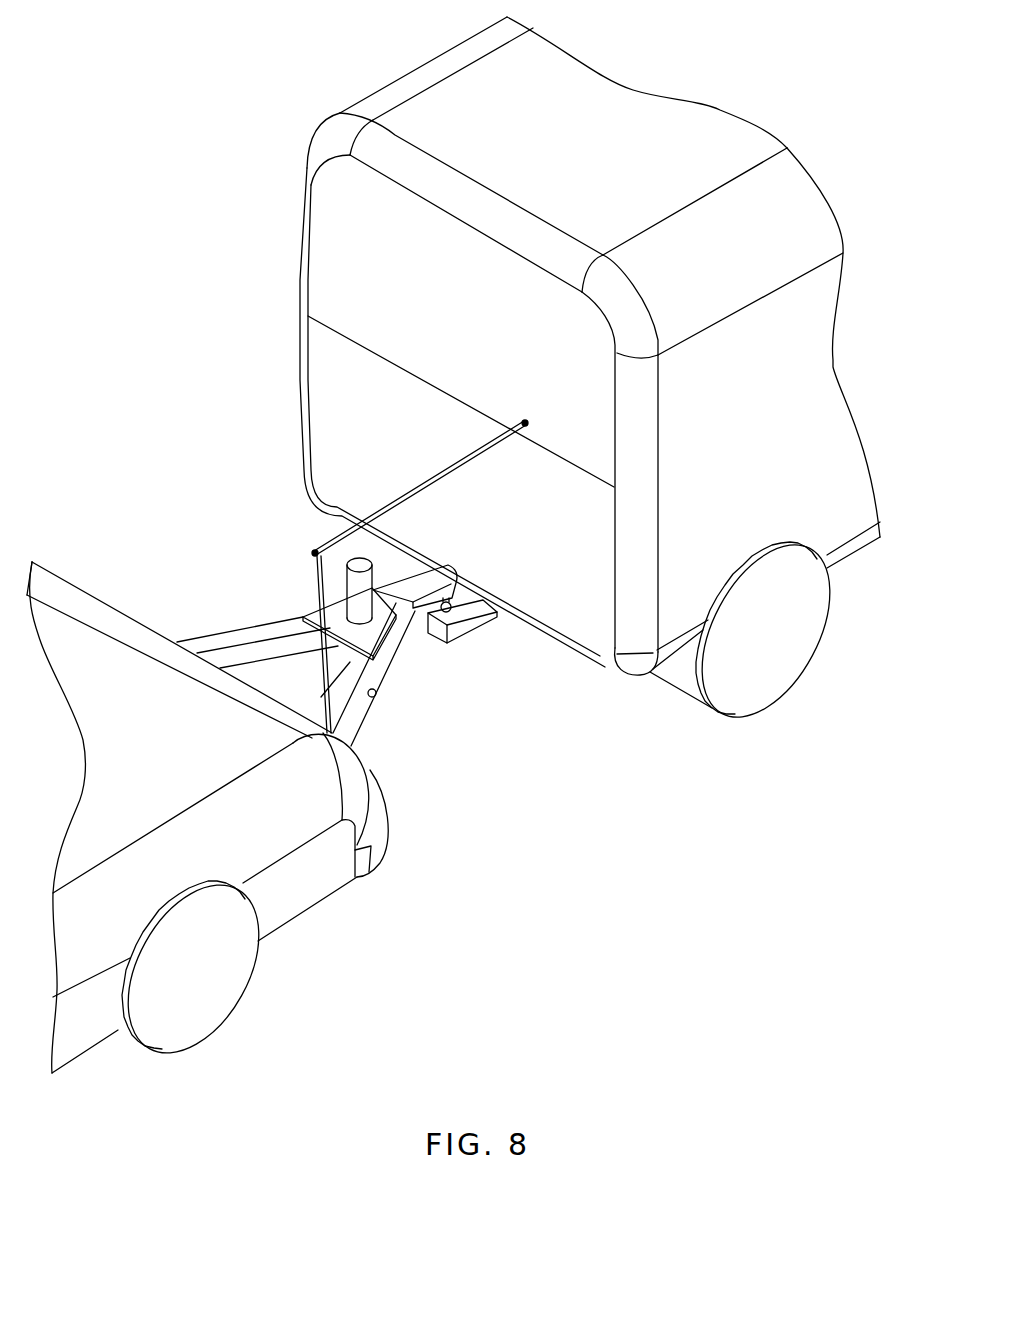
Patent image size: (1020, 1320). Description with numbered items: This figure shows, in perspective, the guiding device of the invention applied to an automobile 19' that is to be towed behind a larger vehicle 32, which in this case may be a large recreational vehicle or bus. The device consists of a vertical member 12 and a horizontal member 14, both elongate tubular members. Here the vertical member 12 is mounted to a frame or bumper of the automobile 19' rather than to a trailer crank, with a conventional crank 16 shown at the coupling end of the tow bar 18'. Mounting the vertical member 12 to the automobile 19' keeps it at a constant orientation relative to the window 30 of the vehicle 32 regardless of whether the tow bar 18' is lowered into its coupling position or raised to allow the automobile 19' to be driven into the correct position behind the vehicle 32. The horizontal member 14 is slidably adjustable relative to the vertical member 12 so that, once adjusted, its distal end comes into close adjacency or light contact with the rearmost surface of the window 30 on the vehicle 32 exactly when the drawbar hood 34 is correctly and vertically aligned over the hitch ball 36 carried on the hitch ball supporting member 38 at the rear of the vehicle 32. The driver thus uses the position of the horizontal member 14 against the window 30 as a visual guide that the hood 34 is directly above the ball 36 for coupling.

The vertical member 12 is at (318, 593).
The horizontal member 14 is at (427, 482).
The crank 16 is at (362, 583).
The tow bar 18' is at (345, 667).
The automobile 19' is at (270, 818).
The window 30 is at (438, 303).
The vehicle 32 is at (337, 113).
The drawbar hood 34 is at (440, 567).
The hitch ball 36 is at (453, 598).
The hitch ball supporting member 38 is at (431, 637).